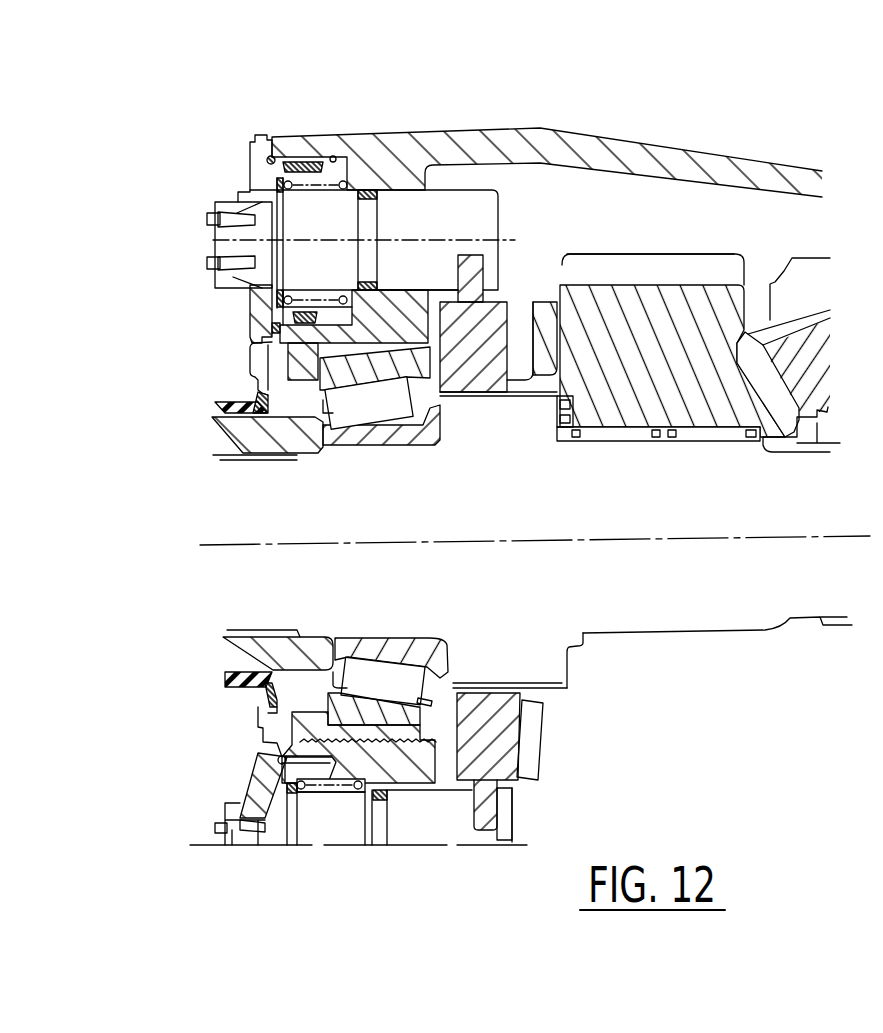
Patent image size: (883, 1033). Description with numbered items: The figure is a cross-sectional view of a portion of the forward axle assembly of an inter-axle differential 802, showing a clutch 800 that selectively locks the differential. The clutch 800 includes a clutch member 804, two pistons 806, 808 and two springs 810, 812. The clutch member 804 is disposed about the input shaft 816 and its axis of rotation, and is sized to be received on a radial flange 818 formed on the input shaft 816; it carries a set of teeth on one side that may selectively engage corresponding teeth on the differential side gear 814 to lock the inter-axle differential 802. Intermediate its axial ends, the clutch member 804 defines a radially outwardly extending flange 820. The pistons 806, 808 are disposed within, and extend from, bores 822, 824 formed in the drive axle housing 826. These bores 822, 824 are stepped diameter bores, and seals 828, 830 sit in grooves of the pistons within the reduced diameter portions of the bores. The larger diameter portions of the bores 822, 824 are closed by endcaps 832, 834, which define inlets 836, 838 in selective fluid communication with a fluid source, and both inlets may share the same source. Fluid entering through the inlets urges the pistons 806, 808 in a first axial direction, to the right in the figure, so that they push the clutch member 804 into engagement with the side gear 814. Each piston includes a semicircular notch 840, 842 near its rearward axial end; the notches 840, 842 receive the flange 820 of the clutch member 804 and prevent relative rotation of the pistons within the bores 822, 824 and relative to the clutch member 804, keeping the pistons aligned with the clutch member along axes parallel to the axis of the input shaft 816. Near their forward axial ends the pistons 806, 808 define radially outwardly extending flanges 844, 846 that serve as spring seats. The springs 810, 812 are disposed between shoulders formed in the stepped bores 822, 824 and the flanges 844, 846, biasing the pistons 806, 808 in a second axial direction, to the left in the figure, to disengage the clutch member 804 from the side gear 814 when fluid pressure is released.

The clutch 800 is at (465, 180).
The inter-axle differential 802 is at (737, 130).
The clutch member 804 is at (472, 373).
The piston 806 is at (410, 196).
The piston 808 is at (420, 852).
The spring 810 is at (310, 187).
The spring 812 is at (336, 792).
The differential side gear 814 is at (692, 300).
The input shaft 816 is at (520, 590).
The radial flange 818 is at (543, 412).
The radially outwardly extending flange 820 is at (477, 277).
The bore 822 is at (334, 157).
The bore 824 is at (420, 783).
The drive axle housing 826 is at (543, 138).
The seal 828 is at (372, 290).
The seal 830 is at (393, 800).
The endcap 832 is at (250, 188).
The endcap 834 is at (247, 800).
The inlet 836 is at (230, 250).
The inlet 838 is at (217, 828).
The semicircular notch 840 is at (460, 266).
The semicircular notch 842 is at (495, 813).
The radially outwardly extending flange 844 is at (278, 183).
The radially outwardly extending flange 846 is at (280, 832).